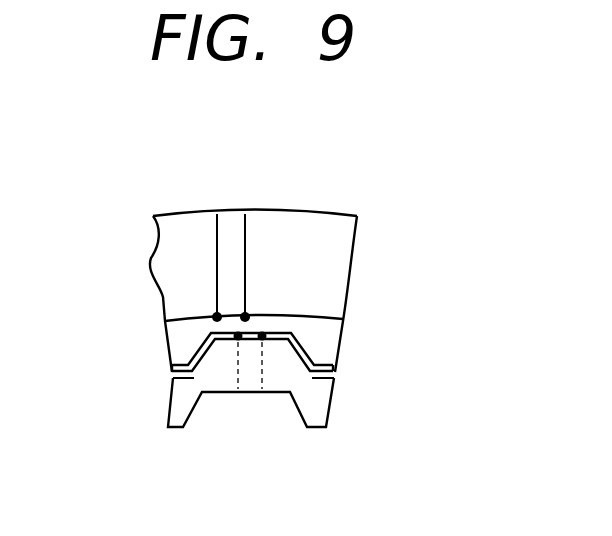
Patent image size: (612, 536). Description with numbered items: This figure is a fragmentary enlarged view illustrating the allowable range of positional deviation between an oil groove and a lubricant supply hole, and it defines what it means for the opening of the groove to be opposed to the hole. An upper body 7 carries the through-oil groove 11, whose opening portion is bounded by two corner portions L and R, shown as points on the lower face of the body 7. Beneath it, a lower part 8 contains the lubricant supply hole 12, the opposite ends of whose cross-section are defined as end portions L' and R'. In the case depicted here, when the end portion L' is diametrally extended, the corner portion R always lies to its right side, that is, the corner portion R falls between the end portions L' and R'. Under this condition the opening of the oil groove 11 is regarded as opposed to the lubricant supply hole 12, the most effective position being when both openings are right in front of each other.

The stator core / yoke body 7 is at (167, 204).
The through-oil groove 11 is at (233, 213).
The tooth / pole piece 8 is at (320, 392).
The lubricant supply hole 12 is at (250, 385).
The corner portion L is at (155, 292).
The corner portion R is at (302, 223).
The end portion L' is at (165, 351).
The end portion R' is at (349, 328).